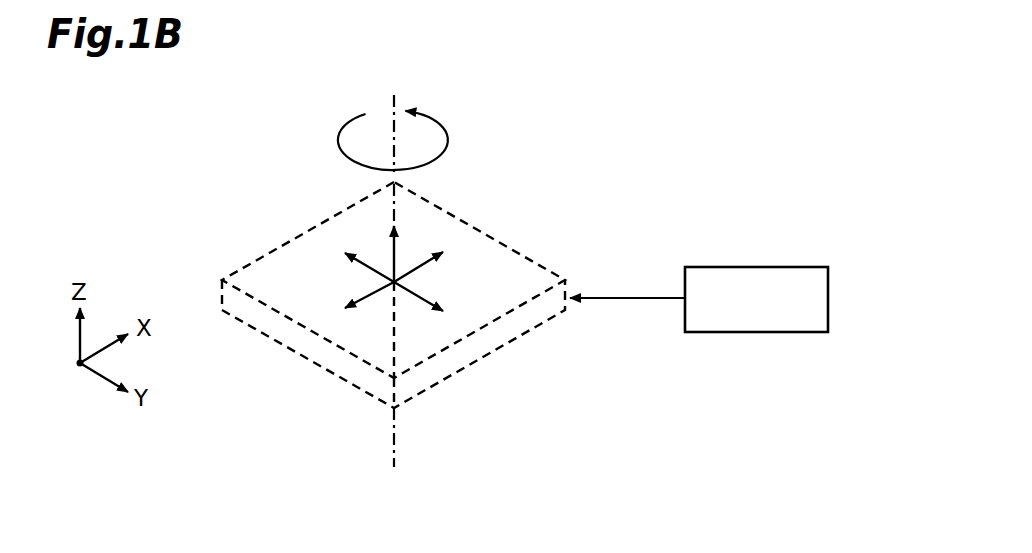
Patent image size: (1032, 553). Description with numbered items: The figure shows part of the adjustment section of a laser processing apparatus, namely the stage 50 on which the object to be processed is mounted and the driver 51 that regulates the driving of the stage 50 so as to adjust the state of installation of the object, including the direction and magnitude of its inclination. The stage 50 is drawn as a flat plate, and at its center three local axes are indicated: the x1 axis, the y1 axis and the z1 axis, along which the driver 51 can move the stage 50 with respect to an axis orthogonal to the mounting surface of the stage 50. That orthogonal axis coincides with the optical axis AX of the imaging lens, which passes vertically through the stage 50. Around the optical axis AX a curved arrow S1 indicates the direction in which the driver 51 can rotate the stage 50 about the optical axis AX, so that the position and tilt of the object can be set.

The stage 50 is at (490, 353).
The driver 51 is at (797, 267).
The optical axis AX is at (395, 266).
The arrow S1 is at (447, 136).
The x1 axis x1 is at (407, 276).
The y1 axis y1 is at (407, 291).
The z1 axis z1 is at (408, 247).